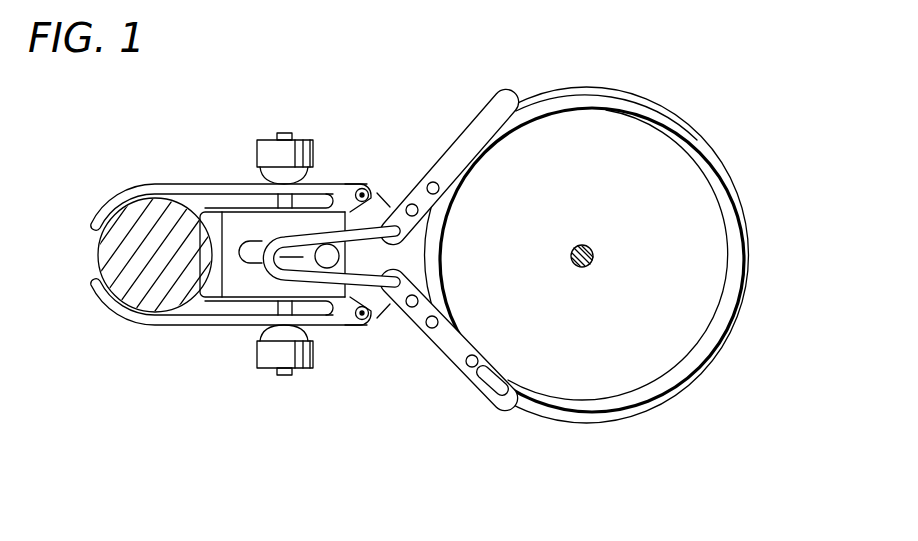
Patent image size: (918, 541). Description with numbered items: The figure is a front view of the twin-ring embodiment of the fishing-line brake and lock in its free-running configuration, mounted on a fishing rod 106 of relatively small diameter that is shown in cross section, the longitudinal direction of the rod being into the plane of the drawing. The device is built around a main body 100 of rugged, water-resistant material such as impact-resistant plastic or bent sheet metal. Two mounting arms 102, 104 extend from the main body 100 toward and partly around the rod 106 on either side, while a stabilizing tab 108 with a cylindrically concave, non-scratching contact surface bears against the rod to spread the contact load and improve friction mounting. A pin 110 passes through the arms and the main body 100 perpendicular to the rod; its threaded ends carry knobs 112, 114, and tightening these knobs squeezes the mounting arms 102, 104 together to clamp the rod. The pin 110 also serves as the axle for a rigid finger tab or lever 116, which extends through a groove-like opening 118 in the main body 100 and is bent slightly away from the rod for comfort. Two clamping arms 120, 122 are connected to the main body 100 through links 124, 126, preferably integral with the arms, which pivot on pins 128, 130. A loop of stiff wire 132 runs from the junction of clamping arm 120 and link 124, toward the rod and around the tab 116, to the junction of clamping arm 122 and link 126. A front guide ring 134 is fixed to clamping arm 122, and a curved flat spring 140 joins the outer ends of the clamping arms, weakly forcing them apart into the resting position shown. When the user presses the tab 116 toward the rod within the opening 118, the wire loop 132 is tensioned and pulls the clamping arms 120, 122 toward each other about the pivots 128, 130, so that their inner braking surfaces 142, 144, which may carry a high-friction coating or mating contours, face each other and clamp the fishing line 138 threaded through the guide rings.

The main body 100 is at (233, 287).
The mounting arm 102 is at (120, 192).
The mounting arm 104 is at (98, 302).
The rod 106 is at (113, 257).
The stabilizing member or tab 108 is at (207, 268).
The pin 110 is at (270, 307).
The knob 112 is at (292, 135).
The knob 114 is at (318, 357).
The finger tab or lever 116 is at (350, 259).
The groove-like opening 118 is at (240, 247).
The clamping arm 120 is at (468, 123).
The clamping arm 122 is at (469, 392).
The link 124 is at (381, 210).
The link 126 is at (396, 314).
The pin (pivot) 128 is at (358, 187).
The pin (pivot) 130 is at (349, 324).
The loop of stiff wire 132 is at (275, 237).
The front guide ring 134 is at (716, 328).
The fishing line 138 is at (588, 244).
The spring 140 is at (687, 127).
The inner clamping or braking surface 142 is at (491, 158).
The inner clamping or braking surface 144 is at (483, 347).